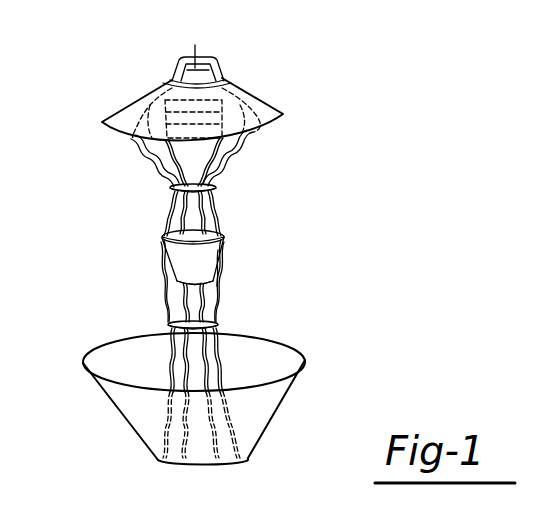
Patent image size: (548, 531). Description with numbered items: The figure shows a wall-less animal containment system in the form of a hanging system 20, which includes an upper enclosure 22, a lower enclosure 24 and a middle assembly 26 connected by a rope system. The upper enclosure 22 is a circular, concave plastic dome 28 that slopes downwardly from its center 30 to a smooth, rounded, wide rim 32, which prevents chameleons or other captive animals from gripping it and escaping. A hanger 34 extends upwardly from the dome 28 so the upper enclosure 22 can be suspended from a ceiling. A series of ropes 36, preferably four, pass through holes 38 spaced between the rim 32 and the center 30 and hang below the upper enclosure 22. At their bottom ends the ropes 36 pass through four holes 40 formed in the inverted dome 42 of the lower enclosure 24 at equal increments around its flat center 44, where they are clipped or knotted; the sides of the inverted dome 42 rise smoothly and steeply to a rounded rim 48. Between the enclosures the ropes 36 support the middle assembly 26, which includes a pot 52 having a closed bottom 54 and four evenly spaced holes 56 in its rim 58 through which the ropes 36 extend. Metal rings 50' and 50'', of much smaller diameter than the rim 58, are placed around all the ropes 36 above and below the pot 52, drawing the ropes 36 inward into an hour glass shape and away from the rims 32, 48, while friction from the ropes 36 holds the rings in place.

The hanging system 20 is at (375, 55).
The upper enclosure 22 is at (124, 83).
The lower enclosure 24 is at (298, 406).
The middle assembly 26 is at (243, 240).
The dome 28 is at (120, 104).
The center 30 is at (213, 72).
The rim 32 is at (276, 128).
The hanger 34 is at (195, 45).
The ropes 36 is at (146, 165).
The holes 38 is at (160, 78).
The holes 40 is at (160, 462).
The inverted dome 42 is at (108, 404).
The center 44 is at (218, 462).
The rim 48 is at (303, 363).
The metal ring 50' is at (139, 186).
The metal ring 50'' is at (148, 312).
The pot 52 is at (197, 257).
The closed bottom 54 is at (217, 287).
The holes 56 is at (162, 236).
The rim 58 is at (173, 296).